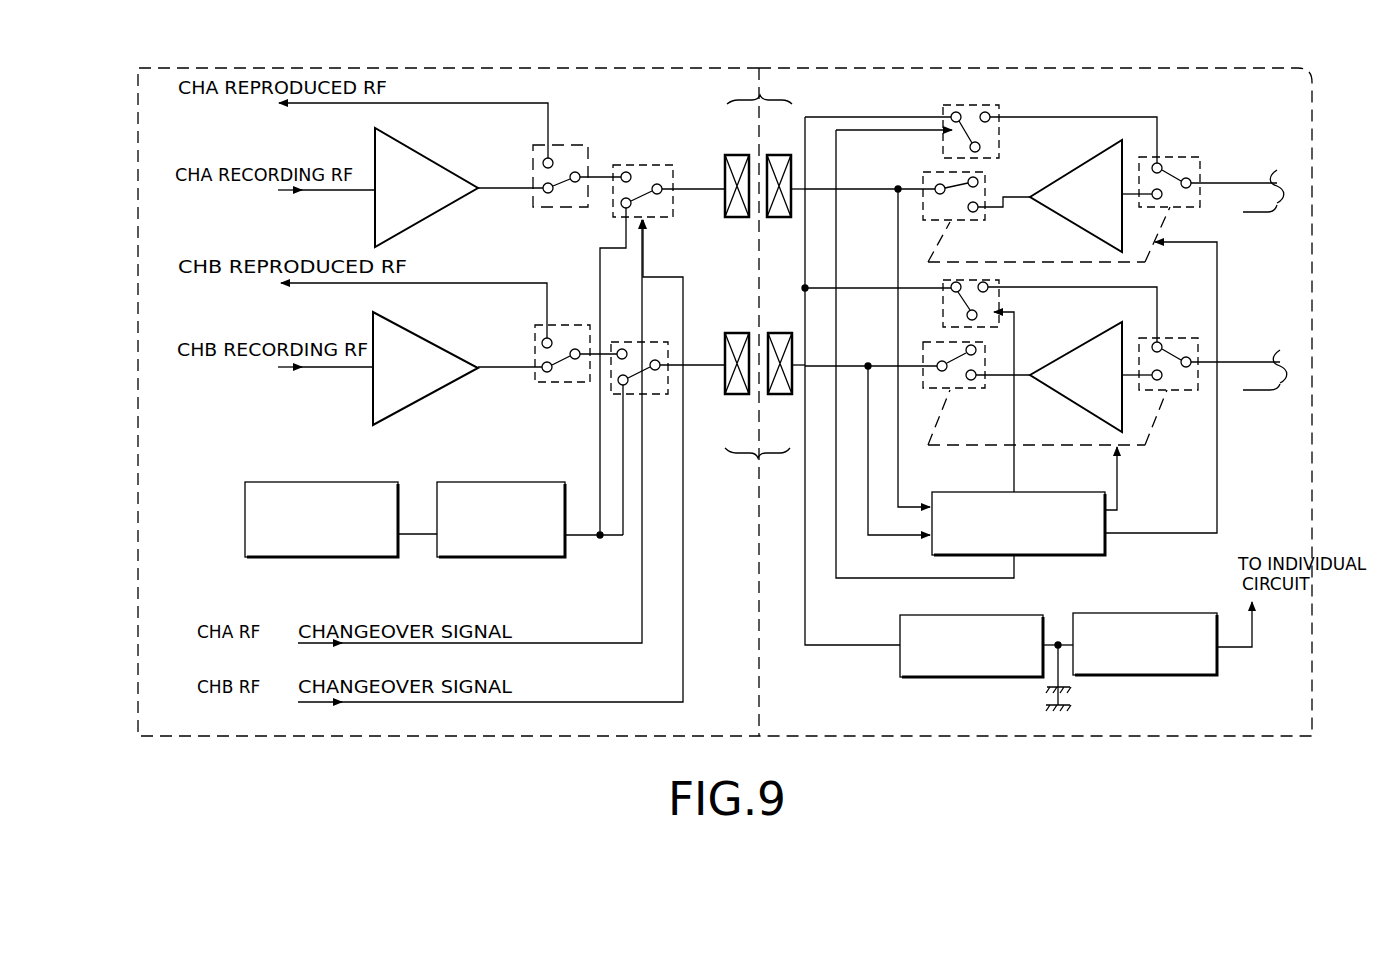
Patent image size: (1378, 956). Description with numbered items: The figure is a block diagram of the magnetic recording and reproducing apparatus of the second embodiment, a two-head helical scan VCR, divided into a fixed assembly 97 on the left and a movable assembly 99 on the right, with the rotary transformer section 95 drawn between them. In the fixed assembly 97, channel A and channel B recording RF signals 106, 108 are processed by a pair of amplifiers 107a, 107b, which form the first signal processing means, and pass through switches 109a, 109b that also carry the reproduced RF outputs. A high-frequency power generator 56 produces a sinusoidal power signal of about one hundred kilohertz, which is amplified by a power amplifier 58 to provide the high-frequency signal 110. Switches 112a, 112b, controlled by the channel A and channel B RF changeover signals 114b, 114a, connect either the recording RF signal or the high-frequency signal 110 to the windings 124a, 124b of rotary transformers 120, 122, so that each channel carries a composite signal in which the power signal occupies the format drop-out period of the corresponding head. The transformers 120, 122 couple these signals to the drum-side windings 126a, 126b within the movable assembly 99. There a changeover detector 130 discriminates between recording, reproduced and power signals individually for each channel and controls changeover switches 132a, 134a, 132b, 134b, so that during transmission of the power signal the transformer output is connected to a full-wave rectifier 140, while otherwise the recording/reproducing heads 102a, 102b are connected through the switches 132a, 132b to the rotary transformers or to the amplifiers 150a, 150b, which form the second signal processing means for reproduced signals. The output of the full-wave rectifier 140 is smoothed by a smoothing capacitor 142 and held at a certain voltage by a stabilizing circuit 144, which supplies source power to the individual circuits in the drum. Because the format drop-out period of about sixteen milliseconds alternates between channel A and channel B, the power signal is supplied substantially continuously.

The fixed assembly 97 is at (205, 68).
The rotary transformer unit 95 is at (771, 56).
The movable assembly 99 is at (1311, 66).
The rotary transformer 120 is at (763, 100).
The rotary transformer 122 is at (756, 462).
The winding 124a is at (736, 155).
The winding 124b is at (737, 333).
The winding 126a is at (778, 217).
The winding 126b is at (782, 394).
The recording RF signal 106 is at (353, 190).
The recording RF signal 108 is at (333, 367).
The amplifier 107a is at (432, 160).
The amplifier 107b is at (430, 342).
The channel A record/reproduce switch 109a is at (566, 145).
The channel B record/reproduce switch 109b is at (562, 325).
The switch 112a is at (632, 165).
The switch 112b is at (621, 342).
The high-frequency signal 110 is at (584, 538).
The RF changeover signal 114a is at (560, 701).
The RF changeover signal 114b is at (560, 643).
The high-frequency power generator 56 is at (353, 482).
The power amplifier 58 is at (516, 482).
The changeover detector 130 is at (943, 492).
The changeover switch 132a is at (963, 220).
The changeover switch 132b is at (965, 390).
The changeover switch 134a is at (988, 105).
The changeover switch 134b is at (1000, 300).
The amplifier 150a is at (1049, 186).
The amplifier 150b is at (1061, 360).
The recording/reproducing head 102a is at (1272, 181).
The recording/reproducing head 102b is at (1290, 397).
The full-wave rectifier 140 is at (1017, 615).
The smoothing capacitor 142 is at (1042, 691).
The stabilizing circuit 144 is at (1127, 613).